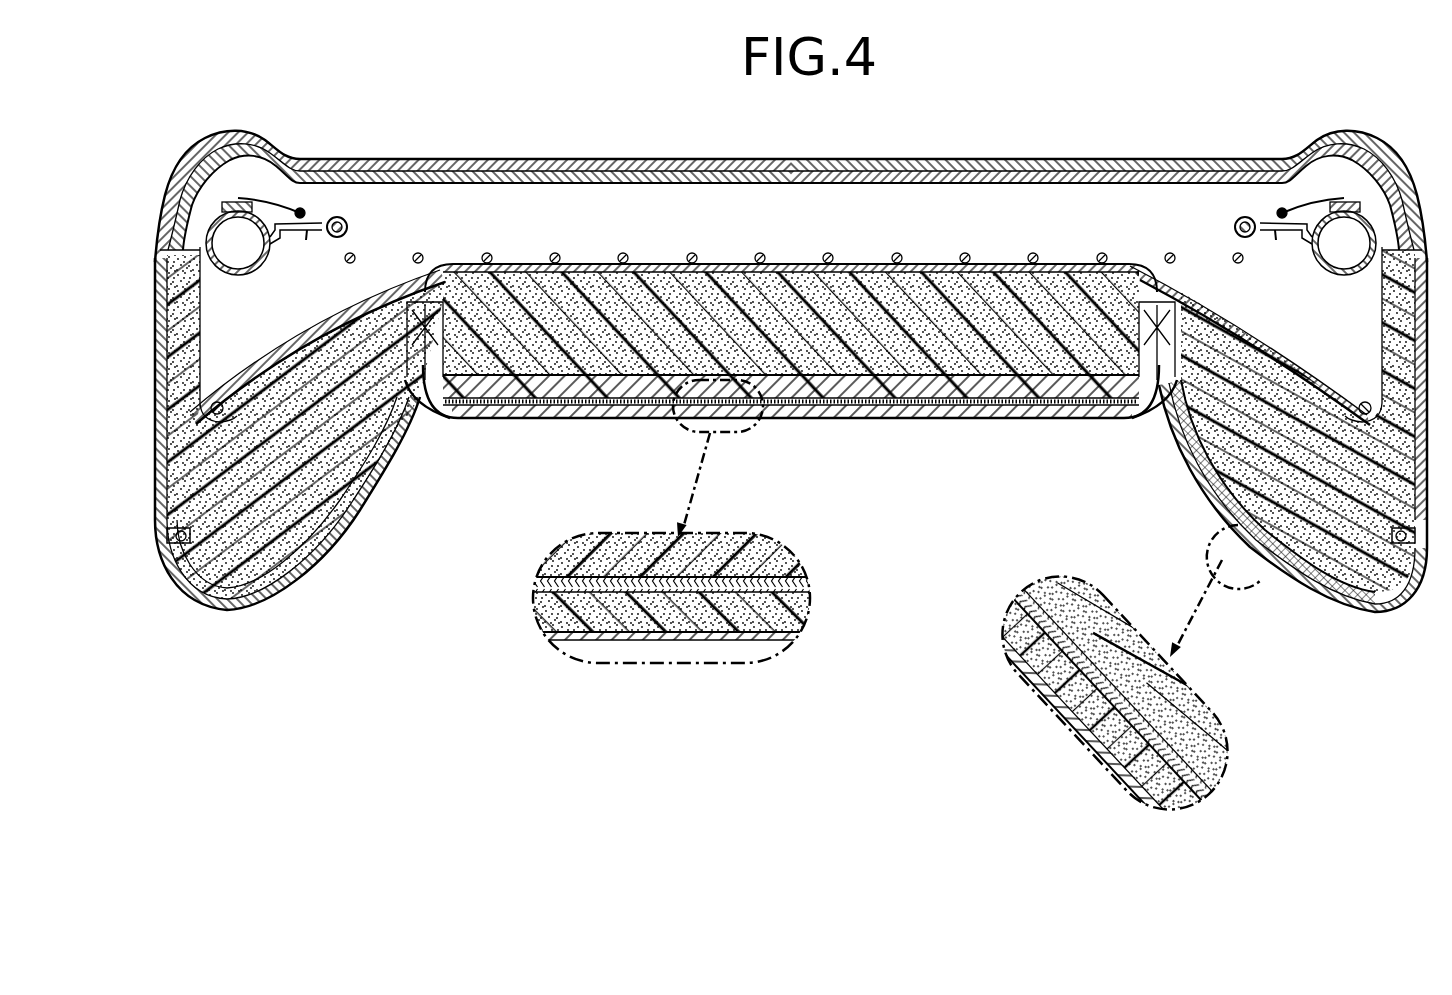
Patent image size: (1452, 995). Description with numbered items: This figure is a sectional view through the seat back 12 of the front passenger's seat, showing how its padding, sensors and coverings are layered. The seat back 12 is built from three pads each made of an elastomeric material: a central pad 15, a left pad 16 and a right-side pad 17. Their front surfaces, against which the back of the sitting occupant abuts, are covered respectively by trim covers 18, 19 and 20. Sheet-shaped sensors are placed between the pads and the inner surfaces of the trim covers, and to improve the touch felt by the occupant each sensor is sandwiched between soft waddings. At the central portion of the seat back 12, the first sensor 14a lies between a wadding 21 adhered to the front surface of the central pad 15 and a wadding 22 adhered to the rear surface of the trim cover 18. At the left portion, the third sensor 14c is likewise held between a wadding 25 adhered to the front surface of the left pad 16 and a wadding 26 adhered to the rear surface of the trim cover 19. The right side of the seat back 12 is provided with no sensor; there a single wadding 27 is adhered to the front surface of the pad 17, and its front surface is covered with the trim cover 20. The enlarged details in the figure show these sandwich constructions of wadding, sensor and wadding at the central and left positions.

The seat back 12 is at (850, 432).
The first sensor 14a is at (603, 420).
The third sensor 14c is at (1053, 583).
The central pad 15 is at (600, 290).
The left pad 16 is at (1283, 362).
The pad 17 is at (313, 402).
The trim cover 18 is at (645, 420).
The trim cover 19 is at (1293, 590).
The trim cover 20 is at (365, 505).
The wadding 21 is at (482, 413).
The wadding 22 is at (560, 417).
The wadding 25 is at (1393, 606).
The wadding 26 is at (1207, 500).
The wadding 27 is at (317, 560).